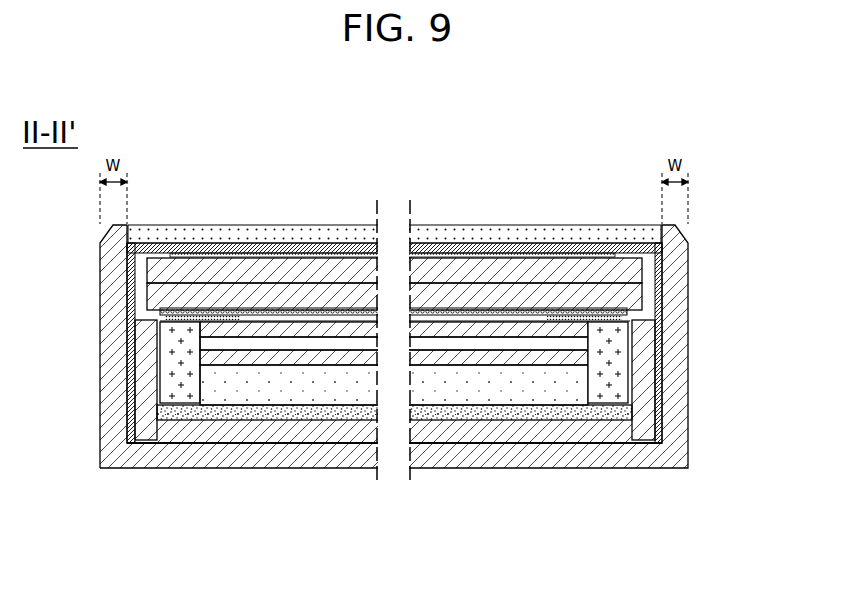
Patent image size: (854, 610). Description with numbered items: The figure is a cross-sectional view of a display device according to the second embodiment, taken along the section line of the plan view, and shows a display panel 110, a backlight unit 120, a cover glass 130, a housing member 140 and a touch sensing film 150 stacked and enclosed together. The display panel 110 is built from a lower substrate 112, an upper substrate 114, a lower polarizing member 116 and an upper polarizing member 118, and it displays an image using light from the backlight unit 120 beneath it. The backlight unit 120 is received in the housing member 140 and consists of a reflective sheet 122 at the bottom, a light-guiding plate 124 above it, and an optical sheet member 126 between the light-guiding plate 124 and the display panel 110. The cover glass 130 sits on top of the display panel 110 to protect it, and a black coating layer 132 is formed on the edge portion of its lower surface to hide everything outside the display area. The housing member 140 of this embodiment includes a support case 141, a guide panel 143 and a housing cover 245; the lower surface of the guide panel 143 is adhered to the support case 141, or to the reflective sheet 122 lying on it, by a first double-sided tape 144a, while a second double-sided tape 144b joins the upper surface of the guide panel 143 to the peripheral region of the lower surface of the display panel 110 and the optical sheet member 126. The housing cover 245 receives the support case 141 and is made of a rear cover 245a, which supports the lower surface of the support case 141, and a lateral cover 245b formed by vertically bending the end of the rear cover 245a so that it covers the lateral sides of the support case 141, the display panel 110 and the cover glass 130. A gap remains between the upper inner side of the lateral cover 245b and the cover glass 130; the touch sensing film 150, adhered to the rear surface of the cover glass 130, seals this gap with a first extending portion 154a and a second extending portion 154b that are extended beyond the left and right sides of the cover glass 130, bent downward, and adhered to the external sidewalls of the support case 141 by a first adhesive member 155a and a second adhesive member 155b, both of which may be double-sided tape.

The display panel 110 is at (394, 228).
The lower substrate 112 is at (319, 297).
The upper substrate 114 is at (284, 270).
The lower polarizing member 116 is at (360, 312).
The upper polarizing member 118 is at (241, 255).
The backlight unit 120 is at (394, 439).
The reflective sheet 122 is at (541, 415).
The light-guiding plate 124 is at (505, 383).
The optical sheet member 126 is at (473, 358).
The cover glass 130 is at (196, 236).
The black coating layer 132 is at (158, 246).
The housing member 140 is at (363, 413).
The support case 141 is at (250, 430).
The guide panel 143 is at (180, 392).
The first double-sided tape 144a is at (607, 405).
The second double-sided tape 144b is at (620, 318).
The touch sensing film 150 is at (394, 215).
The first extending portion 154a is at (128, 289).
The second extending portion 154b is at (657, 276).
The first adhesive member 155a is at (135, 351).
The second adhesive member 155b is at (655, 367).
The housing cover 245 is at (207, 393).
The rear cover 245a is at (238, 493).
The lateral cover 245b is at (110, 395).